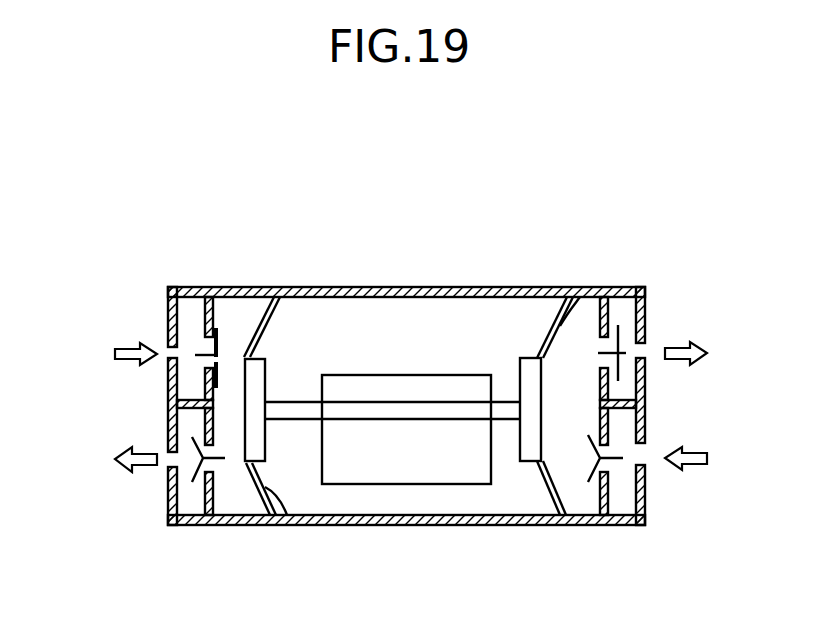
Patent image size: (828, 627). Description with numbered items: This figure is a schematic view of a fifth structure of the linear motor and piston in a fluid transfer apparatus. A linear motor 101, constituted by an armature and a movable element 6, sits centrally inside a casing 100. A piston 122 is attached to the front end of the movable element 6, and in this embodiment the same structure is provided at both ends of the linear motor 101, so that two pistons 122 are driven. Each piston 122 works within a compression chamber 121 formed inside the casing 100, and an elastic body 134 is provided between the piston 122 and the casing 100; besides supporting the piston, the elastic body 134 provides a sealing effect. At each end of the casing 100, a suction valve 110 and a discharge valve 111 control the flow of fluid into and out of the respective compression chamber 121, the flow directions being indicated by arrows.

The casing 100 is at (512, 288).
The linear motor 101 is at (388, 375).
The movable element 6 is at (291, 413).
The compression chamber 121 is at (237, 333).
The piston 122 is at (243, 428).
The elastic body 134 is at (580, 297).
The suction valve 110 is at (208, 356).
The discharge valve 111 is at (180, 472).